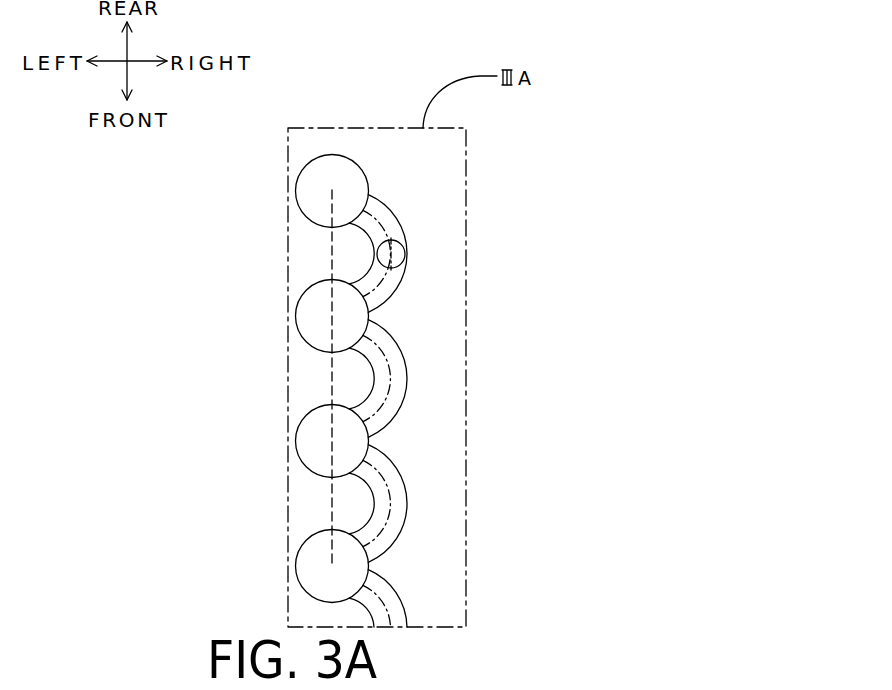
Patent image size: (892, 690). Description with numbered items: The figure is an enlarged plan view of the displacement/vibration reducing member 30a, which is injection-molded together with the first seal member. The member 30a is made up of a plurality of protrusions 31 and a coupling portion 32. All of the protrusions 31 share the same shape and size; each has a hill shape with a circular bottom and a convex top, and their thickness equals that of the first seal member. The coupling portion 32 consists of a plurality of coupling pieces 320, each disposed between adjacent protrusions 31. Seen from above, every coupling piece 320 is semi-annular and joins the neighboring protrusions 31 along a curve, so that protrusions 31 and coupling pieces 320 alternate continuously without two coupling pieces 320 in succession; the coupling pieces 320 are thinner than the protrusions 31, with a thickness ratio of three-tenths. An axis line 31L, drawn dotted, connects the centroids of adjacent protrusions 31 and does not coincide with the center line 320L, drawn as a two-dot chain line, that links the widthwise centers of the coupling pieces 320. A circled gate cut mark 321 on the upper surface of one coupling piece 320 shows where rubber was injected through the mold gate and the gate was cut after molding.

The displacement/vibration reducing member 30a is at (220, 242).
The protrusion 31 is at (318, 310).
The axis line 31L is at (333, 507).
The coupling portion 32 is at (380, 388).
The coupling piece 320 is at (387, 290).
The center line 320L is at (390, 492).
The gate cut mark 321 is at (392, 240).